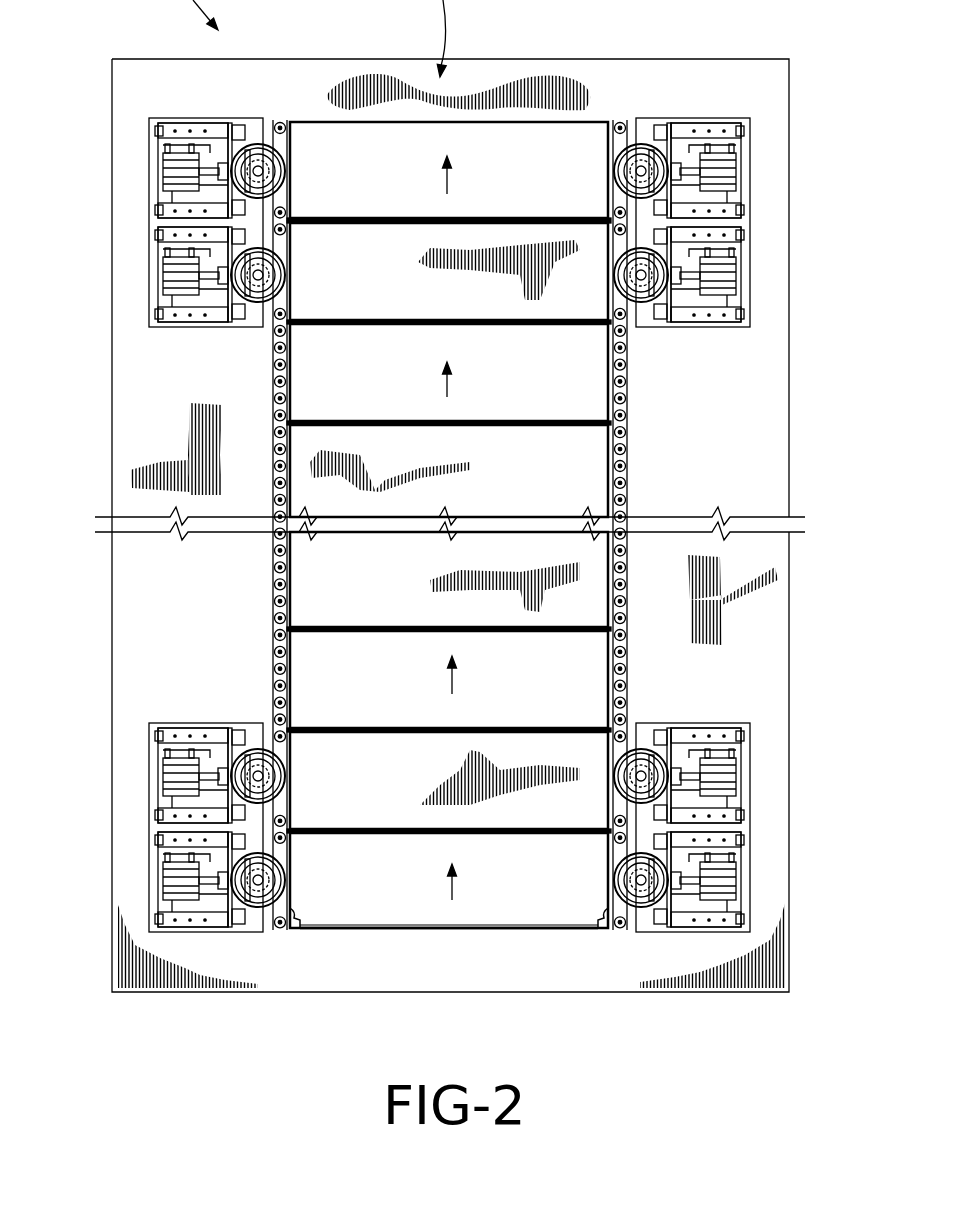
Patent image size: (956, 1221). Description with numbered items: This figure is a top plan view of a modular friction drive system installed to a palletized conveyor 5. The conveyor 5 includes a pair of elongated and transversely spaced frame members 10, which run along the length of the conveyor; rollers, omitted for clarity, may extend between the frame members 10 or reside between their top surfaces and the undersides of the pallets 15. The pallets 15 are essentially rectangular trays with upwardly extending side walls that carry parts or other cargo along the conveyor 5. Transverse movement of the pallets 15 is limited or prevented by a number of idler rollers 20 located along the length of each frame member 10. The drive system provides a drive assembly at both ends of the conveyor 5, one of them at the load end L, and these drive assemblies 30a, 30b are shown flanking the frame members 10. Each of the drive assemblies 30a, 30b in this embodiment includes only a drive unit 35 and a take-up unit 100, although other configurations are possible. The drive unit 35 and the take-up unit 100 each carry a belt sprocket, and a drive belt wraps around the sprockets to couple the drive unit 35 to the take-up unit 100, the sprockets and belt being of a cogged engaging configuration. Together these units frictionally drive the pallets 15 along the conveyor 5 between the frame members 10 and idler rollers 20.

The palletized conveyor 5 is at (457, 943).
The frame member 10 is at (300, 925).
The pallet 15 is at (497, 175).
The idler roller 20 is at (276, 349).
The drive assembly 30a is at (175, 707).
The drive assembly 30b is at (178, 338).
The drive unit 35 is at (148, 256).
The take-up unit 100 is at (148, 156).
The load end L is at (384, 943).